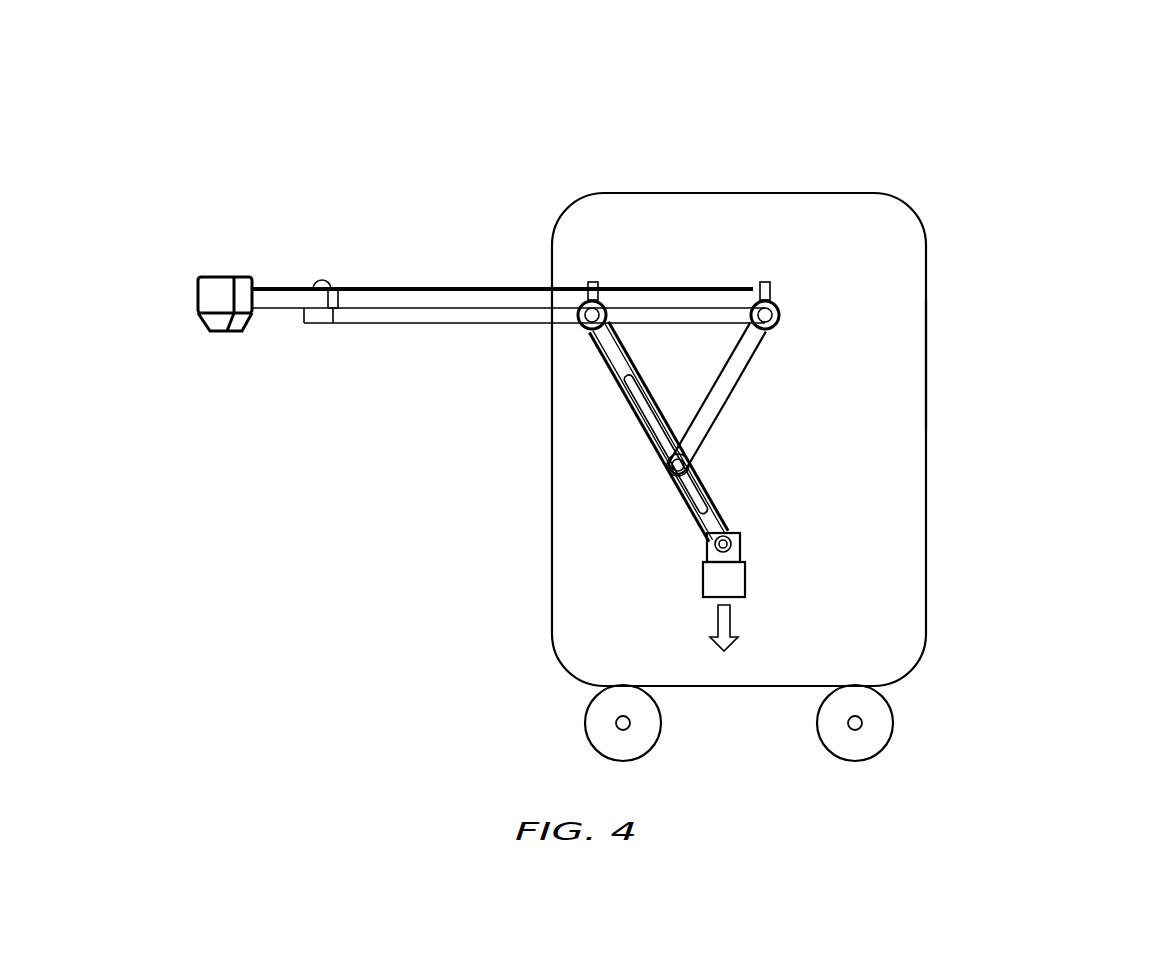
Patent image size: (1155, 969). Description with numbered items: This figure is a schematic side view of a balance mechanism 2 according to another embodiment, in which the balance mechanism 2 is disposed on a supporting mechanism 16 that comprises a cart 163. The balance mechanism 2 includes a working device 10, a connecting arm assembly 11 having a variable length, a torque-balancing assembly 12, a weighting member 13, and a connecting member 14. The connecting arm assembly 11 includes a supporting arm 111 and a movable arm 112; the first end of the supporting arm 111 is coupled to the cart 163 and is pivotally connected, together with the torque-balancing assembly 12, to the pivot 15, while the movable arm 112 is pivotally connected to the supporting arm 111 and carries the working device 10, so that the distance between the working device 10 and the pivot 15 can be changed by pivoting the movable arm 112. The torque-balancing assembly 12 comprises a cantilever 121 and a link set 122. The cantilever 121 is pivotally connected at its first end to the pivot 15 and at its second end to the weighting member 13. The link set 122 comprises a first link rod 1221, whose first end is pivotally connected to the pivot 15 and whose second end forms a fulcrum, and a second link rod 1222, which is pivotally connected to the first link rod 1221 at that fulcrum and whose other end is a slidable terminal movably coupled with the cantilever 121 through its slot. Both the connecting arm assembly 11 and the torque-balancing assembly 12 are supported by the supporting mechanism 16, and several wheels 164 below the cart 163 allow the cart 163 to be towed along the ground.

The balance mechanism 2 is at (1101, 122).
The working device 10 is at (218, 287).
The connecting arm assembly 11 is at (508, 349).
The supporting arm 111 is at (370, 313).
The movable arm 112 is at (285, 296).
The torque-balancing assembly 12 is at (793, 291).
The cantilever 121 is at (625, 402).
The link set 122 is at (787, 398).
The first link rod 1221 is at (716, 376).
The second link rod 1222 is at (708, 412).
The weighting member 13 is at (745, 590).
The connecting member 14 is at (415, 288).
The pivot 15 is at (580, 331).
The supporting mechanism 16 is at (934, 206).
The cart 163 is at (927, 365).
The wheels 164 is at (878, 725).